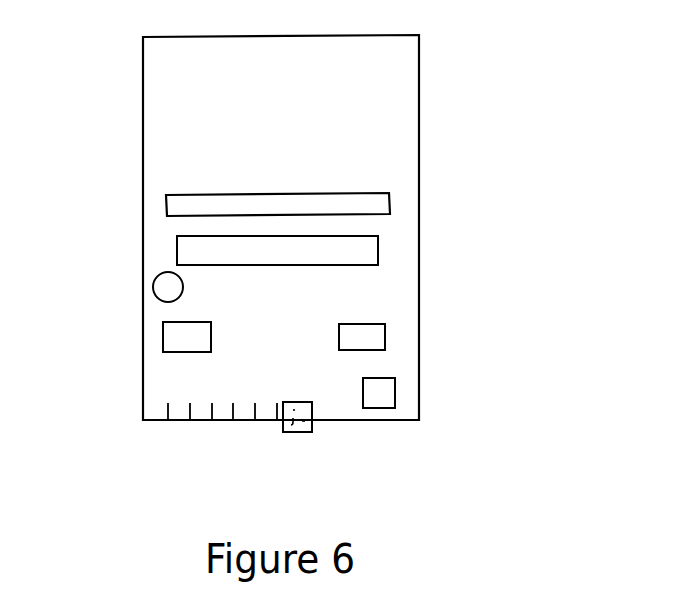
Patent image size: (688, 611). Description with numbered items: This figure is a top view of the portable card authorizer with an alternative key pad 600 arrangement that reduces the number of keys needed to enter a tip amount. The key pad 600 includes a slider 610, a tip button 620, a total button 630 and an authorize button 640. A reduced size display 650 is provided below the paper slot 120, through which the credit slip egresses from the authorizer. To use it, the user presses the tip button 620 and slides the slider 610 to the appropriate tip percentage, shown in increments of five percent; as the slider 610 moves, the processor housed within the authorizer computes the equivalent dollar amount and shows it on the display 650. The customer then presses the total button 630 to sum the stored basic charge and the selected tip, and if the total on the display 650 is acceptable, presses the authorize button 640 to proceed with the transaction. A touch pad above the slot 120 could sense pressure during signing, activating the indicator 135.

The key pad 600 is at (143, 385).
The paper slot 120 is at (388, 205).
The reduced size display 650 is at (378, 248).
The indicator 135 is at (154, 283).
The tip button 620 is at (163, 337).
The total button 630 is at (385, 332).
The authorize button 640 is at (395, 391).
The slider 610 is at (312, 418).